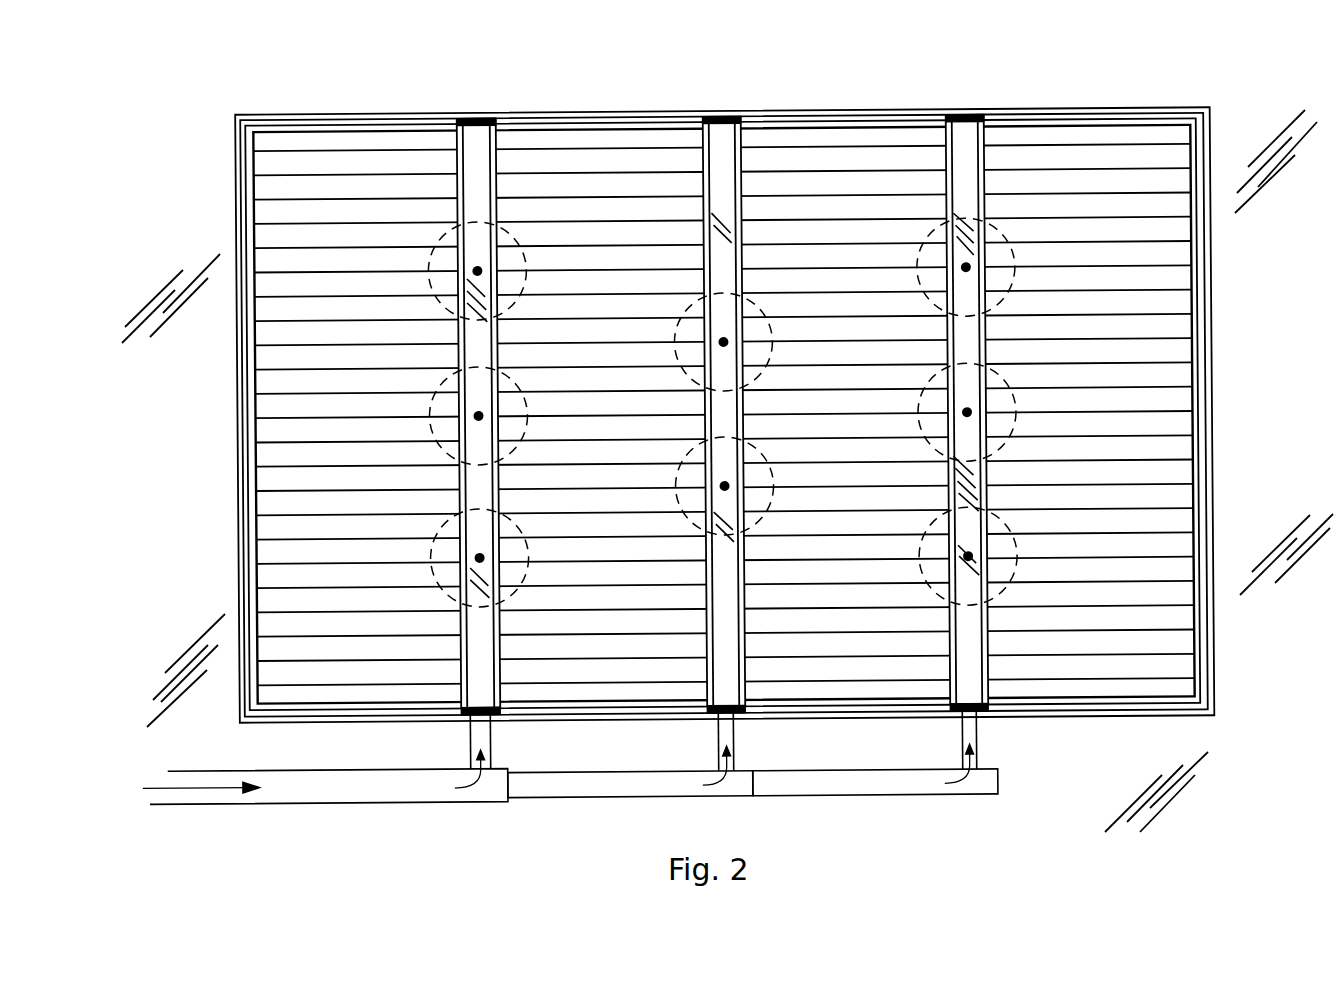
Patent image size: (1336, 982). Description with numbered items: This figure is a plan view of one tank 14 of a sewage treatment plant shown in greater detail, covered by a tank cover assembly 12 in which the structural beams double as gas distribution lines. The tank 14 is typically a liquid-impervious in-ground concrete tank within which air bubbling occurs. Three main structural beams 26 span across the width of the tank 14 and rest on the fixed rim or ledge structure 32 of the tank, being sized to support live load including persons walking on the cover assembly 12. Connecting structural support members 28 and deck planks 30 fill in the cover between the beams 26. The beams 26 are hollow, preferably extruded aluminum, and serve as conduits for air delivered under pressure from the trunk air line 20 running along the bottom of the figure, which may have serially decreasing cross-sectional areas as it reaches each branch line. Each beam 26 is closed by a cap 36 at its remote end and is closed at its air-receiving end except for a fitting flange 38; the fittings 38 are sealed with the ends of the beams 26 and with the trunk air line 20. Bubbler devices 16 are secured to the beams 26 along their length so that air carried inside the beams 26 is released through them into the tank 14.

The tank cover assembly 12 is at (1005, 96).
The tank 14 is at (1265, 109).
The bubbler devices 16 is at (478, 271).
The trunk air line 20 is at (406, 806).
The main structural beams 26 is at (477, 133).
The structural support members 28 is at (942, 133).
The deck planks 30 is at (1090, 133).
The rim or ledge structure 32 is at (1213, 302).
The caps 36 is at (477, 117).
The fitting flange 38 is at (468, 718).